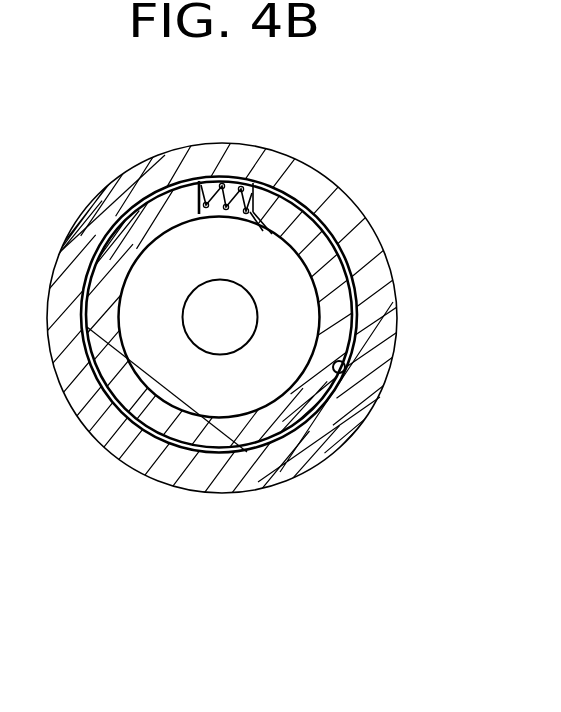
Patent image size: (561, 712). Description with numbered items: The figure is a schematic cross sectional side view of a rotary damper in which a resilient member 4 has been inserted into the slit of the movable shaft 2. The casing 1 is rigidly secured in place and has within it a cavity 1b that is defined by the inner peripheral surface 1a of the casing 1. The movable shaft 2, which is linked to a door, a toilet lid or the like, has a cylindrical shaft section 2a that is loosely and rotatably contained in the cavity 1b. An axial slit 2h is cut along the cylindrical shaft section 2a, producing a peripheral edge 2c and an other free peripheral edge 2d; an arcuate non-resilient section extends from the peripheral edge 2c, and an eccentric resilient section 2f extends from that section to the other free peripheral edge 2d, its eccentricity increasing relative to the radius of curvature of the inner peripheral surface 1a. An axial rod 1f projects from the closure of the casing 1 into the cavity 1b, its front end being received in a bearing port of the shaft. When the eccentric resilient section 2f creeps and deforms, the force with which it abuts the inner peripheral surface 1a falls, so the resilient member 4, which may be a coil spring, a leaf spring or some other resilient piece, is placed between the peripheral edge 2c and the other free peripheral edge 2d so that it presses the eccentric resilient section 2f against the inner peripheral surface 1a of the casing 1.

The casing 1 is at (360, 201).
The inner peripheral surface 1a is at (344, 373).
The cavity 1b is at (273, 387).
The axial rod 1f is at (207, 337).
The movable shaft 2 is at (360, 324).
The cylindrical shaft section 2a is at (248, 455).
The peripheral edge 2c is at (265, 200).
The other free peripheral edge 2d is at (200, 212).
The eccentric resilient section 2f is at (140, 215).
The axial slit 2h is at (236, 212).
The resilient member 4 is at (224, 180).